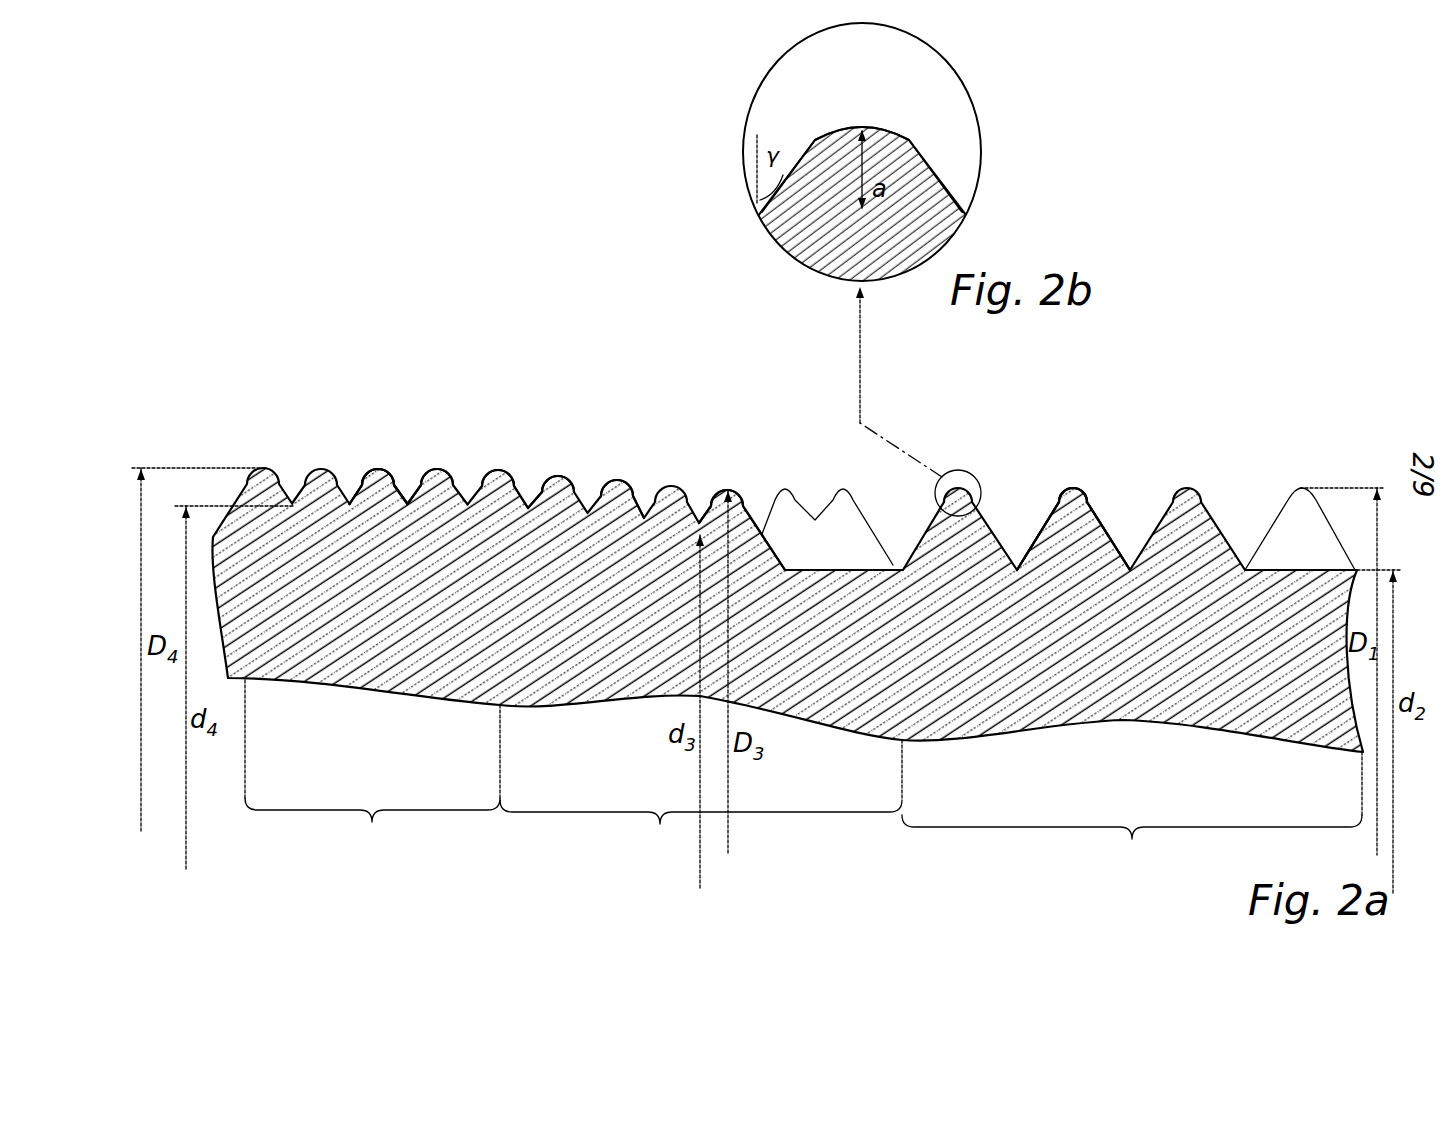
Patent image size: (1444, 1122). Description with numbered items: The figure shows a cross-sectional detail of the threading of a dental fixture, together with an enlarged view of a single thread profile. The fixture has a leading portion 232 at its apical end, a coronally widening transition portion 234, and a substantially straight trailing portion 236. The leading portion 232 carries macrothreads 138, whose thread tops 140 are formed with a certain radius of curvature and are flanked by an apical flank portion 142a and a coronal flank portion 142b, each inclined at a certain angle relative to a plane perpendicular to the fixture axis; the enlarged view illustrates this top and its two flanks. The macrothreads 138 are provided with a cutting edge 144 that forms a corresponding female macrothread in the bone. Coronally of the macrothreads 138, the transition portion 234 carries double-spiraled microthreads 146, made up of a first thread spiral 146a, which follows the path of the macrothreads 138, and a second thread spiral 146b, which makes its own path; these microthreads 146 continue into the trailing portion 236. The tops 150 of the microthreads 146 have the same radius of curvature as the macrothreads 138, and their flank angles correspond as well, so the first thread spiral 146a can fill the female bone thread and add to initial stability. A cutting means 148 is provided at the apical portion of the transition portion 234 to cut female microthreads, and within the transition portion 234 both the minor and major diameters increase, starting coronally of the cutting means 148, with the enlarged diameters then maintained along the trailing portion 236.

In FIG. 2A, the macrothreads 138 is at (1078, 500).
In FIG. 2A, the thread tops 140 is at (1068, 490).
In FIG. 2B, the thread tops 140 is at (875, 127).
In FIG. 2A, the apical flank portion 142a is at (1100, 518).
In FIG. 2B, the apical flank portion 142a is at (953, 178).
In FIG. 2A, the coronal flank portion 142b is at (1038, 518).
In FIG. 2B, the coronal flank portion 142b is at (765, 202).
In FIG. 2A, the cutting edge 144 is at (1313, 517).
In FIG. 2A, the microthreads 146 is at (380, 466).
In FIG. 2A, the first thread spiral 146a is at (493, 470).
In FIG. 2A, the second thread spiral 146b is at (432, 468).
In FIG. 2A, the cutting means 148 is at (785, 505).
In FIG. 2A, the tops of the microthreads 150 is at (376, 469).
In FIG. 2A, the leading portion 232 is at (1132, 847).
In FIG. 2A, the transition portion 234 is at (701, 828).
In FIG. 2A, the trailing portion 236 is at (372, 827).